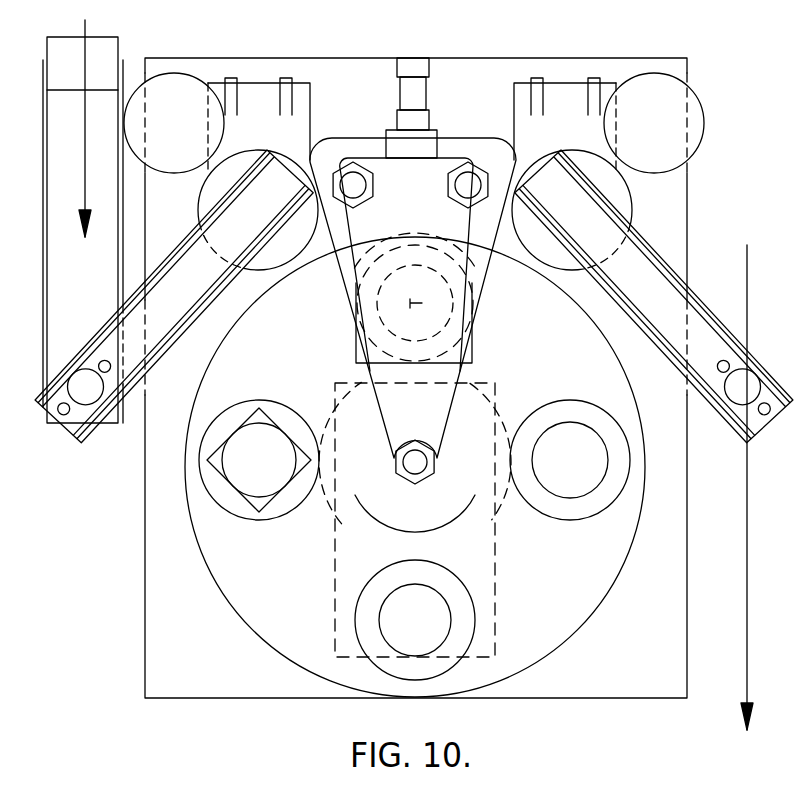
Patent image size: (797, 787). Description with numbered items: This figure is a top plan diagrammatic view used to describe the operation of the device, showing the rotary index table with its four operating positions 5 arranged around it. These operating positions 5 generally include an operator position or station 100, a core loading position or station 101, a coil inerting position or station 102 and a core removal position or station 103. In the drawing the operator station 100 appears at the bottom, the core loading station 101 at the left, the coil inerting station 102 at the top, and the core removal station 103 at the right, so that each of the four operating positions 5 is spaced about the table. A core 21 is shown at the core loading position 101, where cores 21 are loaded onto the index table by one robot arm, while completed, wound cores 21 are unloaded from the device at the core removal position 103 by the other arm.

The operating position 5 is at (424, 305).
The core 21 is at (252, 508).
The operator position 100 is at (422, 672).
The core loading position 101 is at (267, 523).
The coil inerting position 102 is at (355, 320).
The core removal position 103 is at (563, 398).